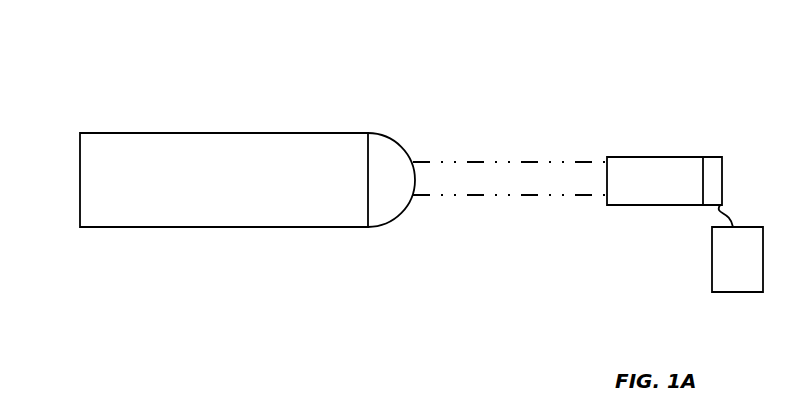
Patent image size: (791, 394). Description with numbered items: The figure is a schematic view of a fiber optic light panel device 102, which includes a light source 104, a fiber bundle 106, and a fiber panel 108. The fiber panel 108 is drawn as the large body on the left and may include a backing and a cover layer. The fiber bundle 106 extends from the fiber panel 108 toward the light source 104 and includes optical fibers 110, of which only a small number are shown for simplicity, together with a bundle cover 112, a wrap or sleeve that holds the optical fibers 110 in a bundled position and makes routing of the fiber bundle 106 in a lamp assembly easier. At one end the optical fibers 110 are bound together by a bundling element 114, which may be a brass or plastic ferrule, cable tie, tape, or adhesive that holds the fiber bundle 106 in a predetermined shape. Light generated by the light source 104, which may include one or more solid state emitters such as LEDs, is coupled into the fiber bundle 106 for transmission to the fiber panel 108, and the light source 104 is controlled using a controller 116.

The fiber optic light panel device 102 is at (65, 60).
The light source 104 is at (723, 157).
The fiber bundle 106 is at (514, 126).
The fiber panel 108 is at (203, 132).
The optical fibers 110 is at (517, 180).
The bundle cover 112 is at (462, 195).
The bundling element 114 is at (630, 157).
The controller 116 is at (711, 272).